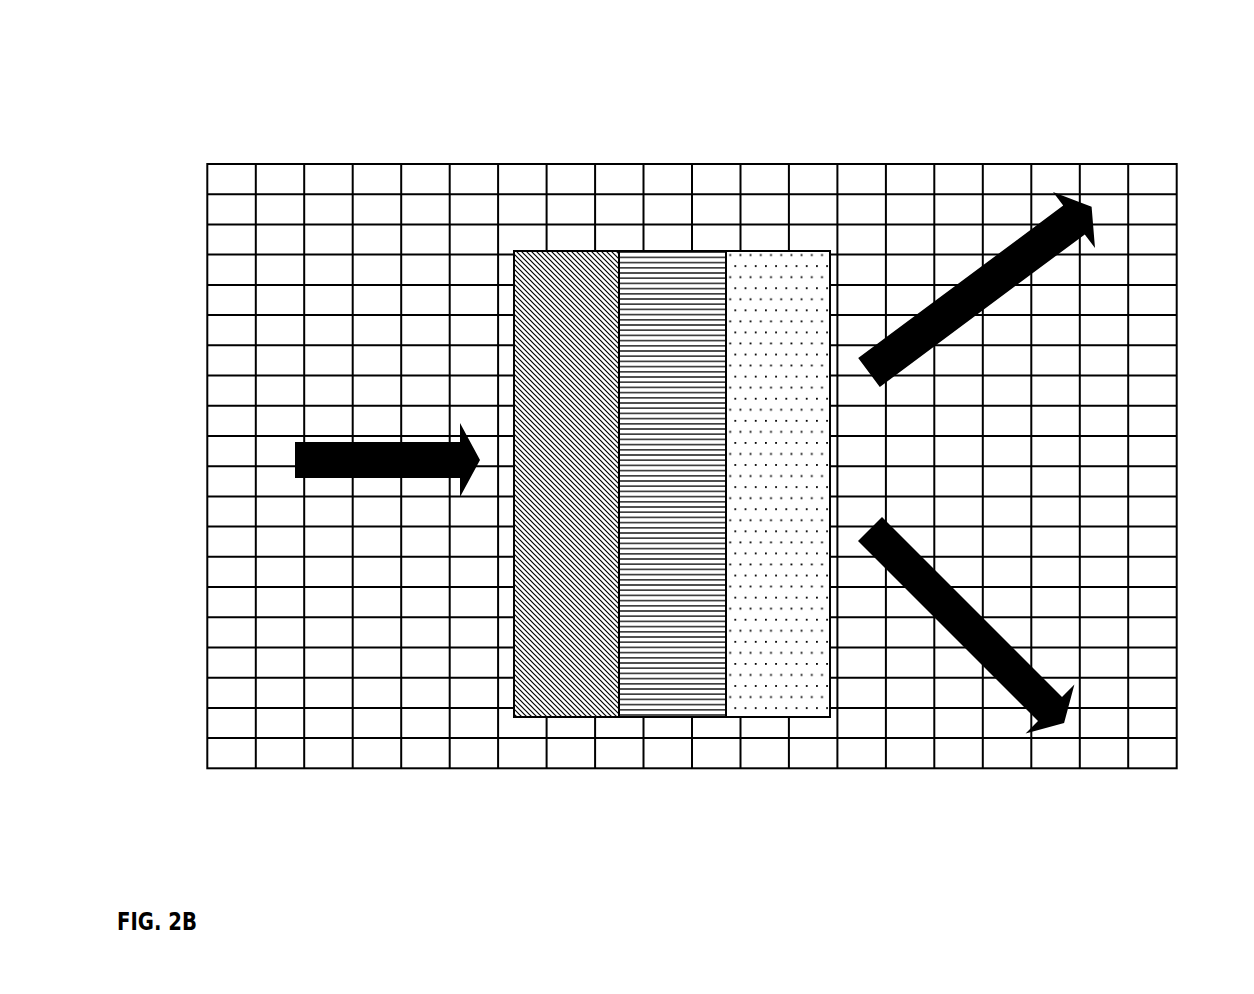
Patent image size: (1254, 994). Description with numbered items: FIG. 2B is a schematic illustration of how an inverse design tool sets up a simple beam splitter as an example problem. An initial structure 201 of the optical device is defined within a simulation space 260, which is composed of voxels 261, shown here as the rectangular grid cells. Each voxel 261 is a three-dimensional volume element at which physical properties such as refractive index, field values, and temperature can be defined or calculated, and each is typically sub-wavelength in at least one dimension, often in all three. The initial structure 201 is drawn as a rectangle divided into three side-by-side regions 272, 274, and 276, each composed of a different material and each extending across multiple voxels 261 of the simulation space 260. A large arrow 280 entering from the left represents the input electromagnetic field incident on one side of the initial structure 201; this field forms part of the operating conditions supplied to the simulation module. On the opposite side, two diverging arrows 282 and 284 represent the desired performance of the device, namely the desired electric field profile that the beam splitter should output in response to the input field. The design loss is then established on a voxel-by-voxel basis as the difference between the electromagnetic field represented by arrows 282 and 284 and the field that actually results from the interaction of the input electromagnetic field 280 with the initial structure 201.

The initial structure 201 is at (588, 490).
The simulation space 260 is at (192, 245).
The voxel 261 is at (1007, 183).
The first region 272 is at (588, 678).
The second region 274 is at (657, 677).
The third region 276 is at (765, 678).
The input electromagnetic field arrow 280 is at (280, 461).
The desired output field arrow 282 is at (1022, 287).
The desired output field arrow 284 is at (982, 603).